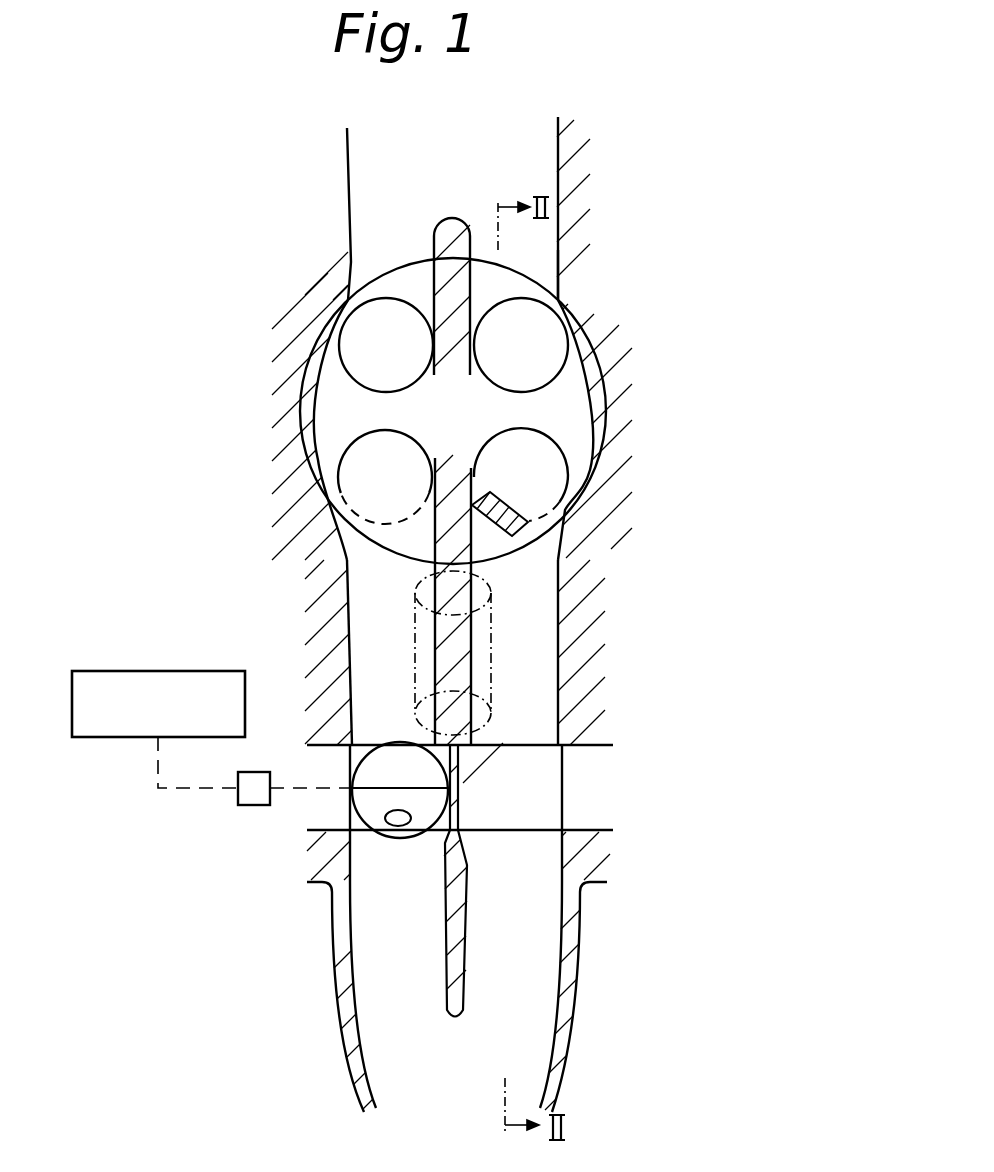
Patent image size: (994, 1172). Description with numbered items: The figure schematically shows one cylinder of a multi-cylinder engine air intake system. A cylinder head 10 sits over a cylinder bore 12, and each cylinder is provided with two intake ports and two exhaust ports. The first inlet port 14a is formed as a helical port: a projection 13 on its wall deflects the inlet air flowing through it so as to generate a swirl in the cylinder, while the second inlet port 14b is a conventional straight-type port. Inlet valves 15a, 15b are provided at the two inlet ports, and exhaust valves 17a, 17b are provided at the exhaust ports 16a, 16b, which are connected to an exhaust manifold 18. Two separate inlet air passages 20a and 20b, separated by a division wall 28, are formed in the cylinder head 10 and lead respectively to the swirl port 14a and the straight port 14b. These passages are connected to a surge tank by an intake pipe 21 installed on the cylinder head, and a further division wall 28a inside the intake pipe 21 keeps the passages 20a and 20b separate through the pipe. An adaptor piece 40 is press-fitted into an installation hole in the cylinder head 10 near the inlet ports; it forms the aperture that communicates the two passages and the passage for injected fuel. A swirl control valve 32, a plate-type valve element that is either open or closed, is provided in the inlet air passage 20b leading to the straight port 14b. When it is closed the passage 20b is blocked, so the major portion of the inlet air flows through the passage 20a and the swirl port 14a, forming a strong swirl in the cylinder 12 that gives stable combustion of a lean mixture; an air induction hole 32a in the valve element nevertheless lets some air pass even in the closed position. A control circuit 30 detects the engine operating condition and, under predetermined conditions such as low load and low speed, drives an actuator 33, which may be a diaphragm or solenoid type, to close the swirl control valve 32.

The cylinder head 10 is at (670, 341).
The cylinder bore 12 is at (575, 422).
The projection 13 is at (538, 505).
The first inlet port 14a is at (556, 541).
The second inlet port 14b is at (350, 552).
The inlet valve 15a is at (538, 477).
The inlet valve 15b is at (332, 493).
The exhaust port 16a is at (558, 256).
The exhaust port 16b is at (368, 268).
The exhaust valve 17a is at (548, 333).
The exhaust valve 17b is at (366, 352).
The exhaust manifold 18 is at (548, 140).
The inlet air passage 20a is at (537, 688).
The inlet air passage 20b is at (378, 692).
The intake pipe 21 is at (567, 1072).
The division wall 28 is at (468, 647).
The division wall 28a is at (478, 752).
The control circuit 30 is at (85, 671).
The swirl control valve 32 is at (352, 800).
The air induction hole 32a is at (398, 827).
The actuator 33 is at (255, 805).
The adaptor piece 40 is at (493, 614).